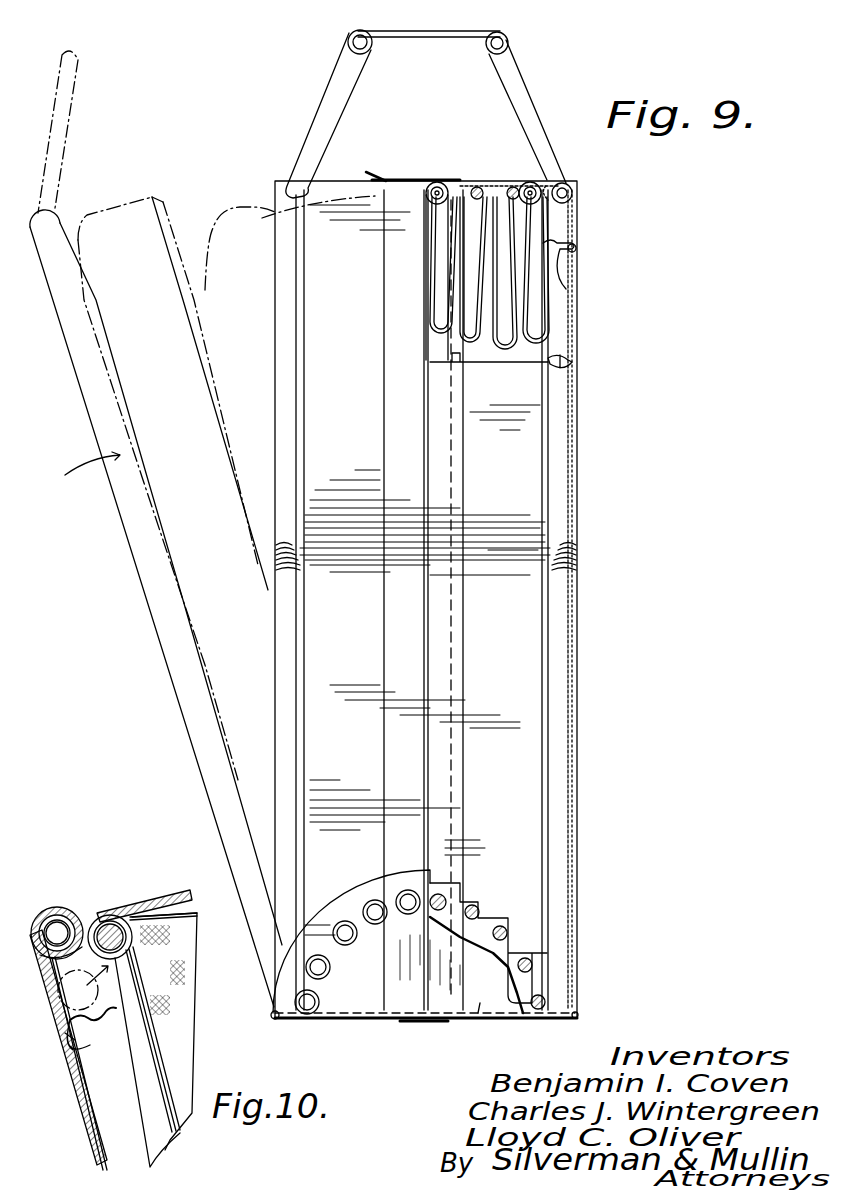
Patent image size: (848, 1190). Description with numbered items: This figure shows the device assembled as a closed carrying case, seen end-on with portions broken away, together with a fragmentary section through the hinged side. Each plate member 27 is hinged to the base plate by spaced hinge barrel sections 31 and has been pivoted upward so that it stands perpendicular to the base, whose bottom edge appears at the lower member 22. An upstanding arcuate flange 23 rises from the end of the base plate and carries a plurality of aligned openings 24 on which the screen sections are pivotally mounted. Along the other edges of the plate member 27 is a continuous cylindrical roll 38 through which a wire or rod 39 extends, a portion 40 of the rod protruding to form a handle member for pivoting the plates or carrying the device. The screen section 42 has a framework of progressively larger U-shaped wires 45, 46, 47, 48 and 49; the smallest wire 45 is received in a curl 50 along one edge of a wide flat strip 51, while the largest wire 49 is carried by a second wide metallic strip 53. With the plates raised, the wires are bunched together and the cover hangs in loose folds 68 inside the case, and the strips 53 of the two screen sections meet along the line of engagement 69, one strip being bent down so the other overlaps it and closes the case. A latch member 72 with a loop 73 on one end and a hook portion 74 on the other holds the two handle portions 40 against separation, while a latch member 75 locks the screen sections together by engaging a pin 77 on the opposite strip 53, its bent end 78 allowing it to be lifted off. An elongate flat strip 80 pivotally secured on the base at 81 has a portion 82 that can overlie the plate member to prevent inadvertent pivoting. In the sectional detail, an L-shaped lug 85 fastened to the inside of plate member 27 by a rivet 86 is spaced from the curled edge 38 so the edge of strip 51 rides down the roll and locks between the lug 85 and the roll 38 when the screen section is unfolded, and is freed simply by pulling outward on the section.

In FIG. 9, the bottom wall 22 is at (545, 1022).
In FIG. 9, the arcuate flange 23 is at (385, 993).
In FIG. 9, the openings 24 is at (392, 948).
In FIG. 10, the plate member 27 is at (80, 1126).
In FIG. 9, the hinge barrel sections 31 is at (270, 1016).
In FIG. 9, the cylindrical roll 38 is at (276, 390).
In FIG. 10, the cylindrical roll 38 is at (66, 906).
In FIG. 9, the wire or rod 39 is at (572, 362).
In FIG. 9, the handle portion 40 is at (320, 110).
In FIG. 10, the screen section 42 is at (176, 892).
In FIG. 9, the U-shaped wire 45 is at (546, 1000).
In FIG. 9, the U-shaped wire 46 is at (520, 202).
In FIG. 9, the U-shaped wire 47 is at (488, 203).
In FIG. 9, the U-shaped wire 48 is at (474, 210).
In FIG. 9, the U-shaped wire 49 is at (448, 894).
In FIG. 10, the curl 50 is at (145, 980).
In FIG. 9, the flat strip 51 is at (315, 657).
In FIG. 10, the flat strip 51 is at (123, 922).
In FIG. 9, the metallic strip 53 is at (467, 686).
In FIG. 9, the folds 68 is at (537, 355).
In FIG. 9, the line of engagement 69 is at (476, 188).
In FIG. 9, the latch member 72 is at (443, 30).
In FIG. 9, the loop 73 is at (372, 44).
In FIG. 9, the hook portion 74 is at (513, 58).
In FIG. 9, the latch member 75 is at (441, 180).
In FIG. 9, the pin 77 is at (400, 177).
In FIG. 9, the end 78 is at (374, 172).
In FIG. 9, the flat strip 80 is at (352, 1010).
In FIG. 9, the pivot 81 is at (425, 1023).
In FIG. 9, the portion 82 is at (482, 994).
In FIG. 9, the L-shaped lug 85 is at (572, 287).
In FIG. 10, the L-shaped lug 85 is at (72, 1079).
In FIG. 10, the rivet 86 is at (95, 915).